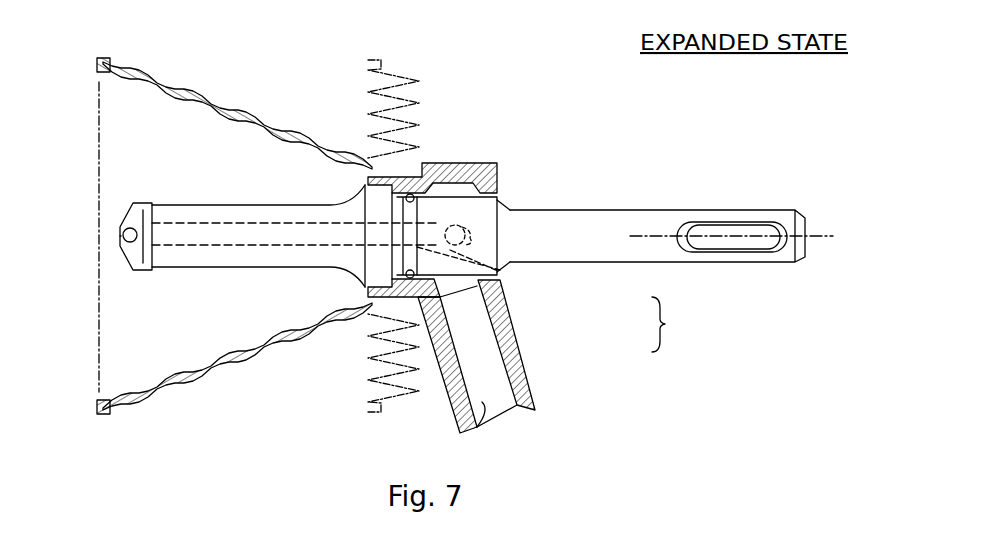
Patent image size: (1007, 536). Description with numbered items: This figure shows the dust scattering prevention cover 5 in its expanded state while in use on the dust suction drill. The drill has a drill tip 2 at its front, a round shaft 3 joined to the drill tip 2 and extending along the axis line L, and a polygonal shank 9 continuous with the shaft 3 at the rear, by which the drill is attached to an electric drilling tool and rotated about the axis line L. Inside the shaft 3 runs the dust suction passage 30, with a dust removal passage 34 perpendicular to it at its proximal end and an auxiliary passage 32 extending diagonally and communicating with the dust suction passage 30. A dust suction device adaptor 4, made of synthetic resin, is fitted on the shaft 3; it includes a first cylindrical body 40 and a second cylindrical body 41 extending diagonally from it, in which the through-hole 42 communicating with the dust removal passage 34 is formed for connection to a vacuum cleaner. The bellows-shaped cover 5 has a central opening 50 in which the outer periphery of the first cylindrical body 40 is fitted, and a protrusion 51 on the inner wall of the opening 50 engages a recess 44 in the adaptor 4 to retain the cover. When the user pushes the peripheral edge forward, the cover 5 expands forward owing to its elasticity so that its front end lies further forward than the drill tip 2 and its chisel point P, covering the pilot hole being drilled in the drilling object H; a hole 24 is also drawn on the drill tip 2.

The drill tip 2 is at (150, 202).
The shaft 3 is at (277, 205).
The dust suction device adaptor 4 is at (668, 324).
The dust scattering prevention cover 5 is at (205, 97).
The shank 9 is at (603, 223).
The hole 24 is at (127, 238).
The dust suction passage 30 is at (223, 243).
The auxiliary passage 32 is at (502, 257).
The dust removal passage 34 is at (490, 293).
The first cylindrical body 40 is at (498, 186).
The second cylindrical body 41 is at (535, 389).
The through-hole 42 is at (482, 406).
The recess 44 is at (370, 282).
The opening 50 is at (370, 165).
The protrusion 51 is at (413, 167).
The drilling object H is at (98, 135).
The chisel point P is at (118, 238).
The axis line L is at (812, 226).